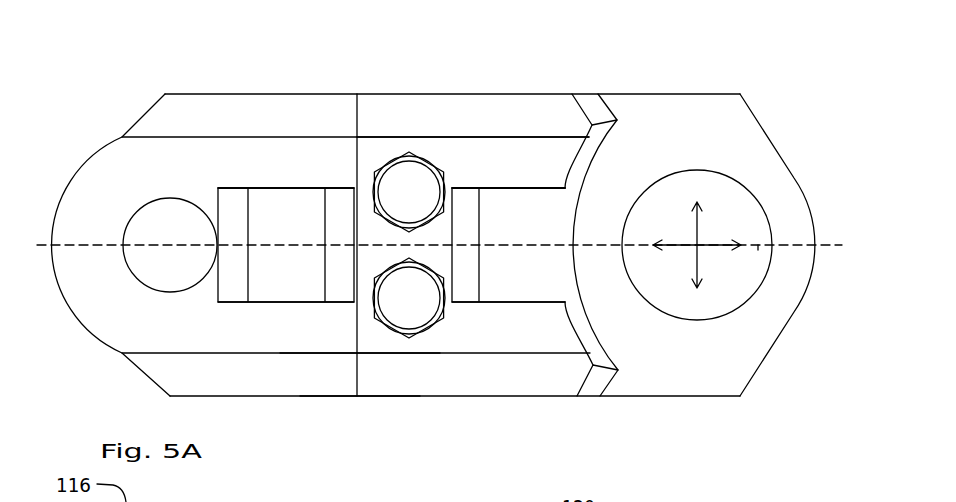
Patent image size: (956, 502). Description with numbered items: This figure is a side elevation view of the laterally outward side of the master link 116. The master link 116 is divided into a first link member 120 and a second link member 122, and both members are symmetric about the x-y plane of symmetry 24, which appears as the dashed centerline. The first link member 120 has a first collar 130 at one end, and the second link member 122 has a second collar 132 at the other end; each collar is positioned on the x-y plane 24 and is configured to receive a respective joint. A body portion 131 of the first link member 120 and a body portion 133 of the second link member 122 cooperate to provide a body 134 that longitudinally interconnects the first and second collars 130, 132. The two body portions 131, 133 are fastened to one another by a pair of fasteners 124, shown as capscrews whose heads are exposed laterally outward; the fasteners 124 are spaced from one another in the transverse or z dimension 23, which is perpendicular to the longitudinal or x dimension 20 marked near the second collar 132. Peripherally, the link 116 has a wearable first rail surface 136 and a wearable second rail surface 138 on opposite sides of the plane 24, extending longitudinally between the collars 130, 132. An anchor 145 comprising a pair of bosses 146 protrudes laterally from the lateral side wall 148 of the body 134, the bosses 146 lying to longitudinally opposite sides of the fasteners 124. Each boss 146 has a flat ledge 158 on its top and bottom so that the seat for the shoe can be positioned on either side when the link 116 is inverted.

The master link 116 is at (137, 64).
The first collar 130 is at (102, 214).
The first link member 120 is at (237, 385).
The body portion of the first link member 131 is at (297, 385).
The body portion of the second link member 133 is at (390, 383).
The body 134 is at (383, 440).
The second rail surface 138 is at (513, 397).
The first rail surface 136 is at (560, 93).
The second link member 122 is at (543, 380).
The second collar 132 is at (770, 143).
The lateral side wall 148 is at (507, 150).
The boss 146 is at (312, 215).
The anchor 145 is at (447, 62).
The flat ledge 158 is at (267, 188).
The fastener 124 is at (422, 205).
The longitudinal dimension 20 is at (683, 243).
The transverse dimension 23 is at (697, 260).
The x-y plane of symmetry 24 is at (758, 245).